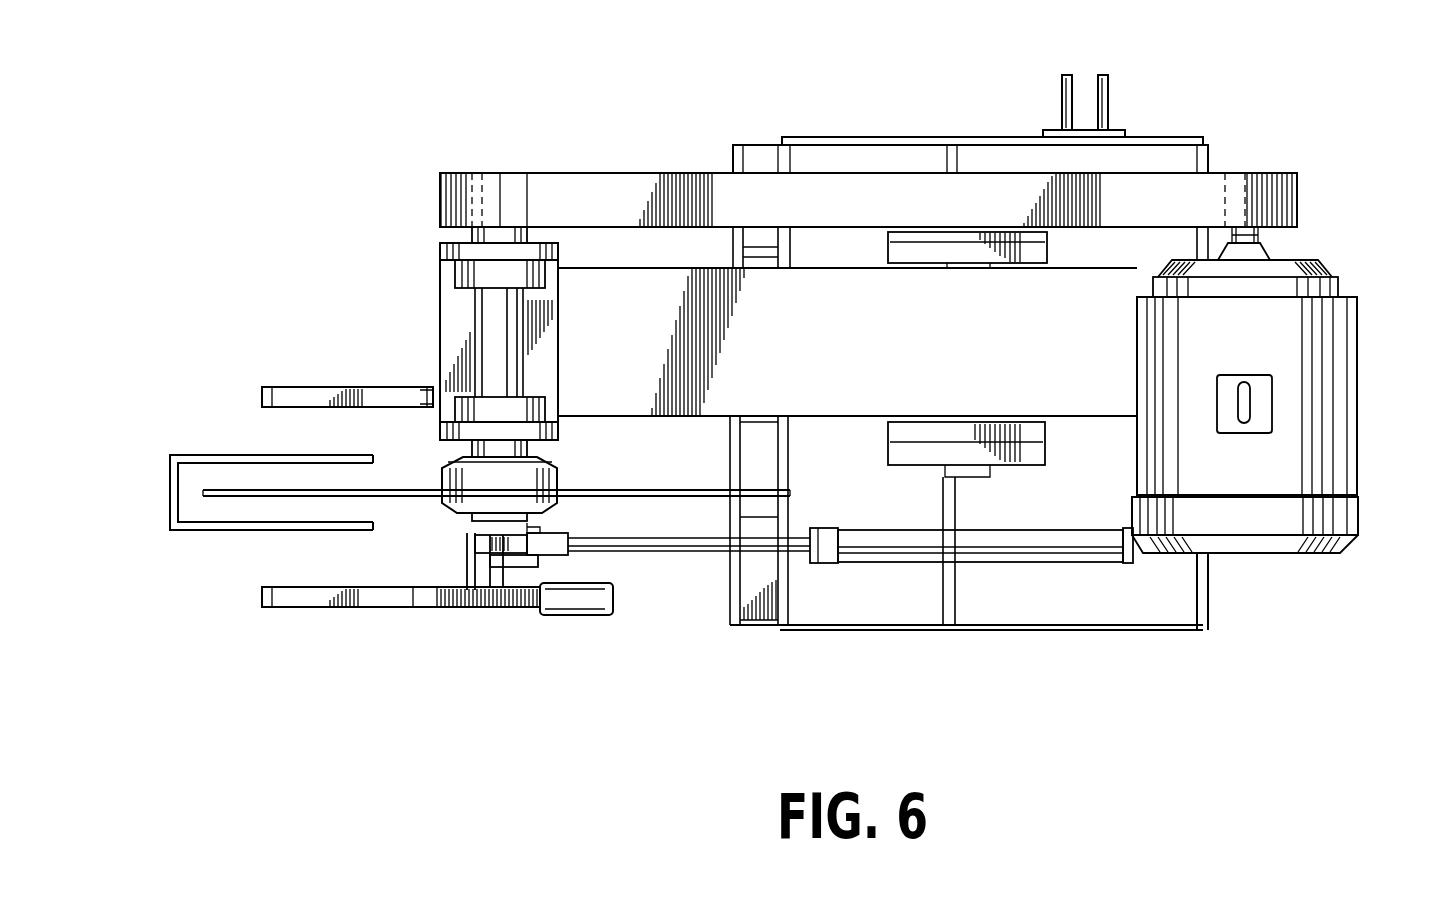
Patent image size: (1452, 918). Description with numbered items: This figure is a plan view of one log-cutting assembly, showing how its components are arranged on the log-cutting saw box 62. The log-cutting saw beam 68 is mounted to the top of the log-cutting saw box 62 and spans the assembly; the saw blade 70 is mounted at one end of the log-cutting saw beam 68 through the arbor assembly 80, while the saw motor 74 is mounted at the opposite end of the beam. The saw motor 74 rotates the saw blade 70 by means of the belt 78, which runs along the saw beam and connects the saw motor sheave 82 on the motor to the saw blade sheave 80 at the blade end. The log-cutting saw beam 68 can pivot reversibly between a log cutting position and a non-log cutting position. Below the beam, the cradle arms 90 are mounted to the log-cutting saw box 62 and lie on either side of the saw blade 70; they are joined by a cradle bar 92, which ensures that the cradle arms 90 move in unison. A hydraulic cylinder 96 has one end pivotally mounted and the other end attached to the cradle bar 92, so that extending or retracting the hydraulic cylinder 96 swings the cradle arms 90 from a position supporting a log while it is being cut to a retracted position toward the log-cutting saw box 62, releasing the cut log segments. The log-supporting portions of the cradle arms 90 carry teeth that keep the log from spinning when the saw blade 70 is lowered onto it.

The log-cutting saw box 62 is at (1165, 137).
The log-cutting saw beam 68 is at (653, 295).
The saw blade 70 is at (380, 490).
The saw motor 74 is at (1281, 313).
The belt 78 is at (610, 185).
The arbor assembly 80 is at (528, 198).
The saw motor sheave 82 is at (1225, 230).
The cradle arms 90 is at (320, 392).
The cradle bar 92 is at (473, 552).
The hydraulic cylinder 96 is at (672, 558).